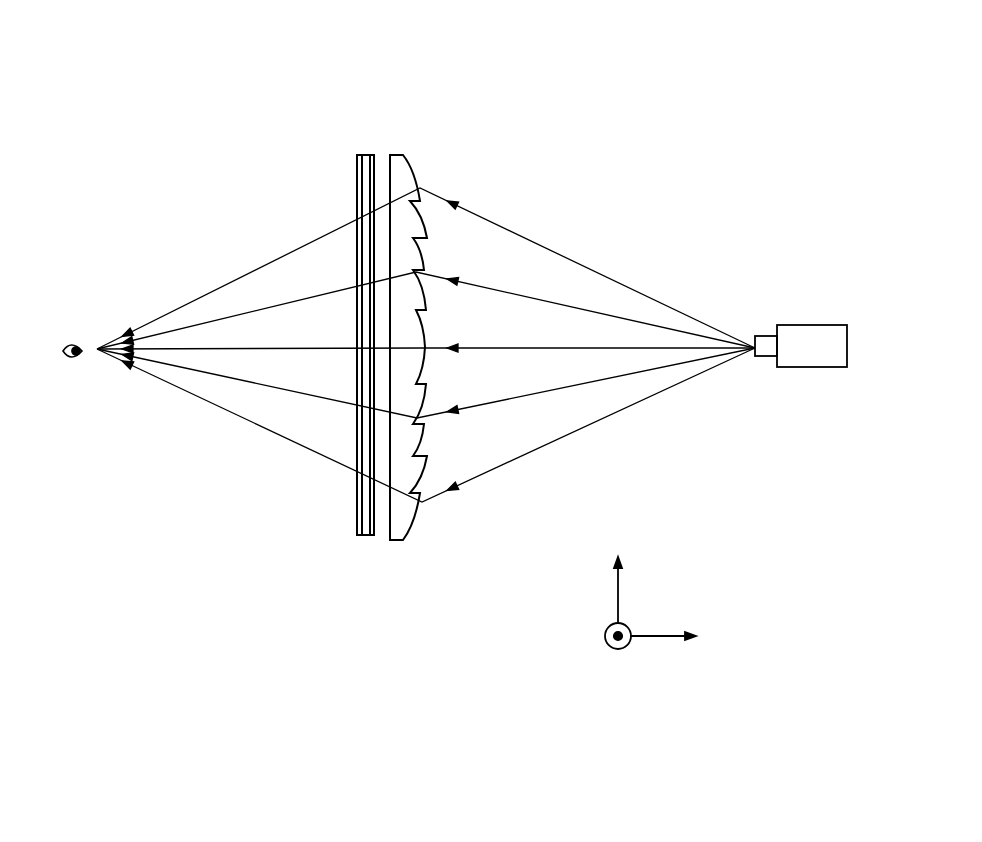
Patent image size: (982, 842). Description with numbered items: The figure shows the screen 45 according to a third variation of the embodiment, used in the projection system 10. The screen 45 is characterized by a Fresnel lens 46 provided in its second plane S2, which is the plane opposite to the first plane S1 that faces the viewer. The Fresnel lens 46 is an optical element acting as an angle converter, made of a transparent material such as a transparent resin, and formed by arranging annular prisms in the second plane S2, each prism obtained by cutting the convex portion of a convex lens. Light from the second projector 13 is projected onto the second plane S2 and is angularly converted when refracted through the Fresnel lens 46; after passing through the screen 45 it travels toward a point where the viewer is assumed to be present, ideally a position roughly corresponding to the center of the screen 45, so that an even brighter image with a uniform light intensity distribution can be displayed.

The projection system 10 is at (252, 101).
The screen 45 is at (387, 146).
The Fresnel lens 46 is at (418, 175).
The second projector 13 is at (797, 325).
The first plane S1 is at (352, 518).
The second plane S2 is at (424, 528).